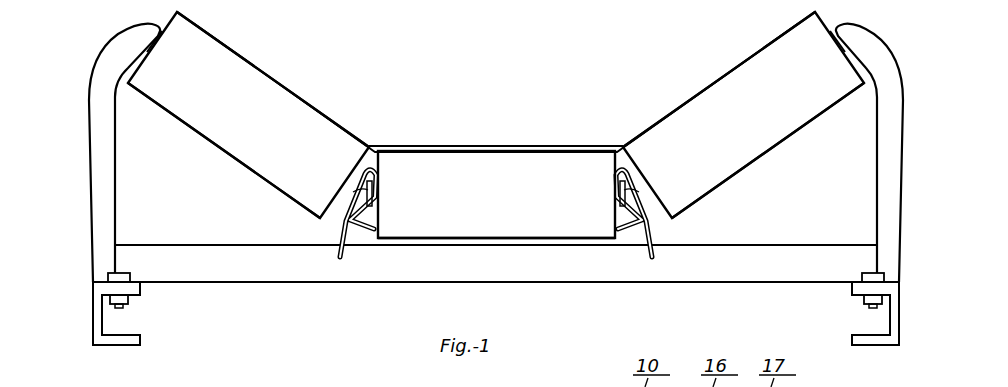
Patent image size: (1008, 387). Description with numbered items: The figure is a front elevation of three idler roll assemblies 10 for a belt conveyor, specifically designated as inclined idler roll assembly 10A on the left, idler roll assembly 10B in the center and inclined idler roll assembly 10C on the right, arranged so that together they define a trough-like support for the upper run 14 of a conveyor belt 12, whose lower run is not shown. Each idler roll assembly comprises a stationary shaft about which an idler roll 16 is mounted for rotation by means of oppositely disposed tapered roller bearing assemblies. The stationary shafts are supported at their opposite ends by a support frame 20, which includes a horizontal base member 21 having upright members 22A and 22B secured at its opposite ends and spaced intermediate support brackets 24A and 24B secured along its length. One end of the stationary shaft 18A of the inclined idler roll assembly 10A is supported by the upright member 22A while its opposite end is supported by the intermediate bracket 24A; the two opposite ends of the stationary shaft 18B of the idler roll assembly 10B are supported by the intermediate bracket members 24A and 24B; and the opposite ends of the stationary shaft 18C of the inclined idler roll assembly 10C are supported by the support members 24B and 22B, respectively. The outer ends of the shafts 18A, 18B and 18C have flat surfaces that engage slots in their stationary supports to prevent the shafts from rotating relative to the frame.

The idler roll assemblies 10 is at (486, 178).
The inclined idler roll assembly 10A is at (221, 141).
The idler roll assembly 10B is at (452, 235).
The inclined idler roll assembly 10C is at (750, 160).
The conveyor belt 12 is at (580, 132).
The upper run 14 is at (495, 132).
The idler roll 16 is at (300, 144).
The stationary shaft 18A is at (147, 55).
The stationary shaft 18B is at (614, 197).
The stationary shaft 18C is at (840, 47).
The support frame 20 is at (277, 282).
The horizontal base member 21 is at (404, 278).
The upright member 22A is at (92, 201).
The upright member 22B is at (893, 212).
The intermediate support bracket 24A is at (337, 232).
The intermediate support bracket 24B is at (636, 228).